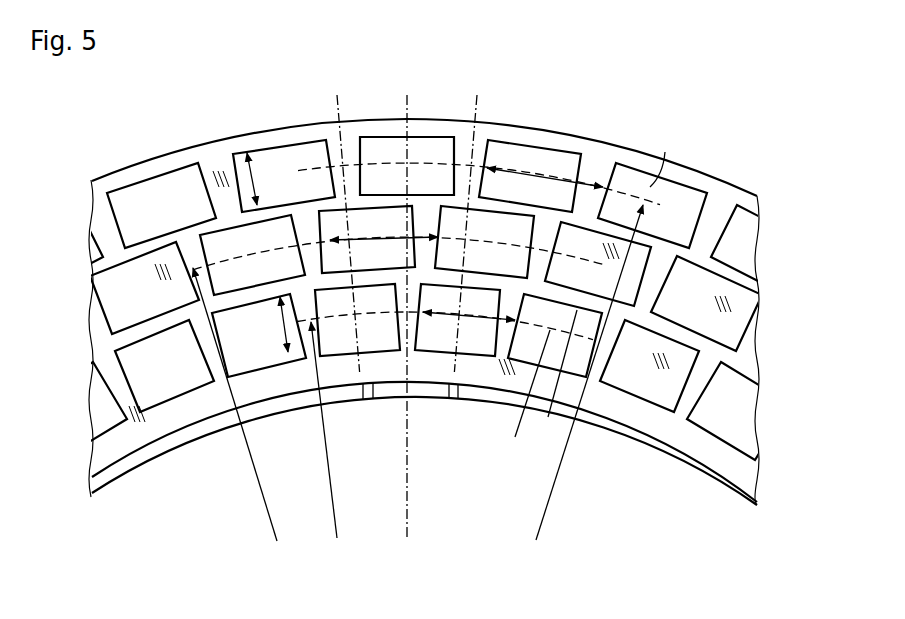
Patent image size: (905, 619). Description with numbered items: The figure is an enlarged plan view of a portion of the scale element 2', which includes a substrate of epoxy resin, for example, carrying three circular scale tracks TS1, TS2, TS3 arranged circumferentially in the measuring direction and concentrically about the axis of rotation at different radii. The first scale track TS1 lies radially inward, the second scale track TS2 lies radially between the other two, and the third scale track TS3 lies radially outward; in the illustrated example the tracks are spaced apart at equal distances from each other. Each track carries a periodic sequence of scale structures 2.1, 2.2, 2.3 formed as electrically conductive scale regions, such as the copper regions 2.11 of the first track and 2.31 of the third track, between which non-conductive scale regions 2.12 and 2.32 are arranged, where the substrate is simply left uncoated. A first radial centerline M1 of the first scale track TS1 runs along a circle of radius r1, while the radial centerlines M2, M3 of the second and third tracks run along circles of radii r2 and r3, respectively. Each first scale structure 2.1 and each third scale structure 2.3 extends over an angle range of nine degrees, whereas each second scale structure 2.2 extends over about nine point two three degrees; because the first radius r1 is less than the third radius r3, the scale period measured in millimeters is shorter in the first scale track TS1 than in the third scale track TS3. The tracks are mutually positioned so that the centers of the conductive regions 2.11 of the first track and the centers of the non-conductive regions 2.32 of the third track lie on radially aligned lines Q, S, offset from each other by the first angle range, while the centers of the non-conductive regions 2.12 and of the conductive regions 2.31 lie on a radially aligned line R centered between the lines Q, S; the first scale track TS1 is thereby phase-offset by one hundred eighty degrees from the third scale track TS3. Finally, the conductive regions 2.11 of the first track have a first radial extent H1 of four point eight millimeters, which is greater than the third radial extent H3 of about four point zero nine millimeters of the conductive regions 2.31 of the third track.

The scale element 2' is at (405, 305).
The conductive scale region of third scale track 2.31 is at (170, 190).
The non-conductive scale region of third scale track 2.32 is at (222, 177).
The third scale structure 2.3 is at (742, 213).
The conductive scale region of first scale track 2.11 is at (155, 382).
The non-conductive scale region of first scale track 2.12 is at (210, 365).
The first scale structure 2.1 is at (627, 373).
The second scale structure 2.2 is at (688, 312).
The first scale track TS1 is at (407, 399).
The second scale track TS2 is at (404, 278).
The third scale track TS3 is at (411, 207).
The radially aligned line Q is at (338, 101).
The radially aligned line R is at (409, 101).
The radially aligned line S is at (474, 101).
The first radial extent H1 is at (270, 324).
The third radial extent H3 is at (268, 179).
The first radial centerline M1 is at (521, 400).
The radial centerline of second scale track M2 is at (553, 381).
The radial centerline of third scale track M3 is at (666, 156).
The first radius r1 is at (332, 430).
The second radius r2 is at (241, 404).
The third radius r3 is at (589, 372).